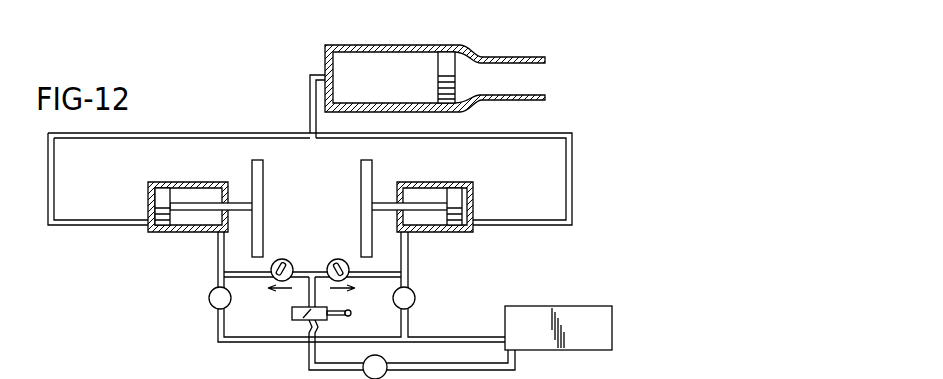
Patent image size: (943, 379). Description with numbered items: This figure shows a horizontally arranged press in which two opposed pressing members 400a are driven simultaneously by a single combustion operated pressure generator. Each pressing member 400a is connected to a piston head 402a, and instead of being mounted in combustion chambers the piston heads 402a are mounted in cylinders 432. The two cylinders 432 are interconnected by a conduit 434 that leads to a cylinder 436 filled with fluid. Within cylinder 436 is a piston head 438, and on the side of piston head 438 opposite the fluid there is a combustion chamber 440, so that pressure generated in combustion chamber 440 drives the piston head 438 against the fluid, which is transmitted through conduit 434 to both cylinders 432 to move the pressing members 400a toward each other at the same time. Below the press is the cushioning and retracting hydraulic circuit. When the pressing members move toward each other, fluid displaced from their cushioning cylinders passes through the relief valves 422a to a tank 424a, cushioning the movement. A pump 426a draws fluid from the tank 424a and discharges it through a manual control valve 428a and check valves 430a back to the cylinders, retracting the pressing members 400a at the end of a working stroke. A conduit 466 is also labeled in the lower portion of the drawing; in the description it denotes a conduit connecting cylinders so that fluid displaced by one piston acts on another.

The conduit 434 is at (573, 139).
The cylinder 436 is at (375, 46).
The piston head 438 is at (448, 62).
The combustion chamber 440 is at (500, 70).
The cylinders 432 is at (150, 194).
The pressing members 400a is at (360, 218).
The piston heads 402a is at (165, 196).
The check valves 430a is at (338, 259).
The relief valves 422a is at (210, 300).
The manual control valve 428a is at (292, 313).
The pump 426a is at (386, 361).
The tank 424a is at (612, 336).
The conduit 466 is at (219, 378).